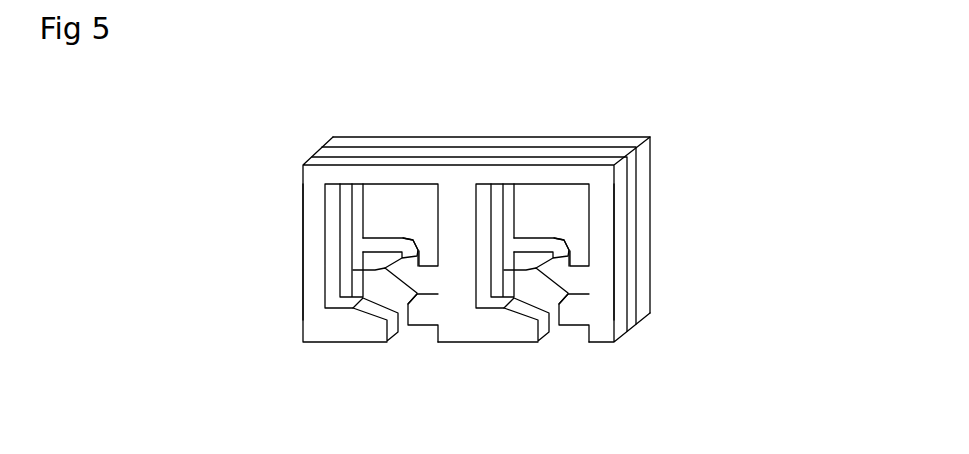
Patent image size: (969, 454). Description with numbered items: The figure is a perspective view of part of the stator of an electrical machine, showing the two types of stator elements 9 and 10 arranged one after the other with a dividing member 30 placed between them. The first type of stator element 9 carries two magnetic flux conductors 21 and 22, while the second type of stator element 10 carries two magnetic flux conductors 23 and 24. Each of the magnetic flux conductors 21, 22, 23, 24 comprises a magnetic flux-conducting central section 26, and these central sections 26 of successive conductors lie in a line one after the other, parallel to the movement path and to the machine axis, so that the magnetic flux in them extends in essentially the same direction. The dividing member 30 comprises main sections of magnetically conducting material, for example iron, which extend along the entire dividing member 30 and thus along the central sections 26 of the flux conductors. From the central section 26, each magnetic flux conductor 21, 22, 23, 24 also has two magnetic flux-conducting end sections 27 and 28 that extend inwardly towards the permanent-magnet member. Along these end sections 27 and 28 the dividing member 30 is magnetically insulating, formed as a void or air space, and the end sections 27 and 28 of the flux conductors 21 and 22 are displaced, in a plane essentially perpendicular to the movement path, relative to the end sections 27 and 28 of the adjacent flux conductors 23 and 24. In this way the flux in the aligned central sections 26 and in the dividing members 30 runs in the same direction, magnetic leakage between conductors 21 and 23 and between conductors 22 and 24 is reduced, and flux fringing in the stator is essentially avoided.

The stator element 9 is at (638, 135).
The stator element 10 is at (298, 165).
The magnetic flux conductor 21 is at (357, 215).
The magnetic flux conductor 22 is at (643, 218).
The magnetic flux conductor 23 is at (350, 175).
The magnetic flux conductor 24 is at (493, 173).
The magnetic flux-conducting central section 26 is at (313, 207).
The magnetic flux-conducting end section 27 is at (373, 255).
The magnetic flux-conducting end section 28 is at (415, 275).
The dividing member 30 is at (597, 150).